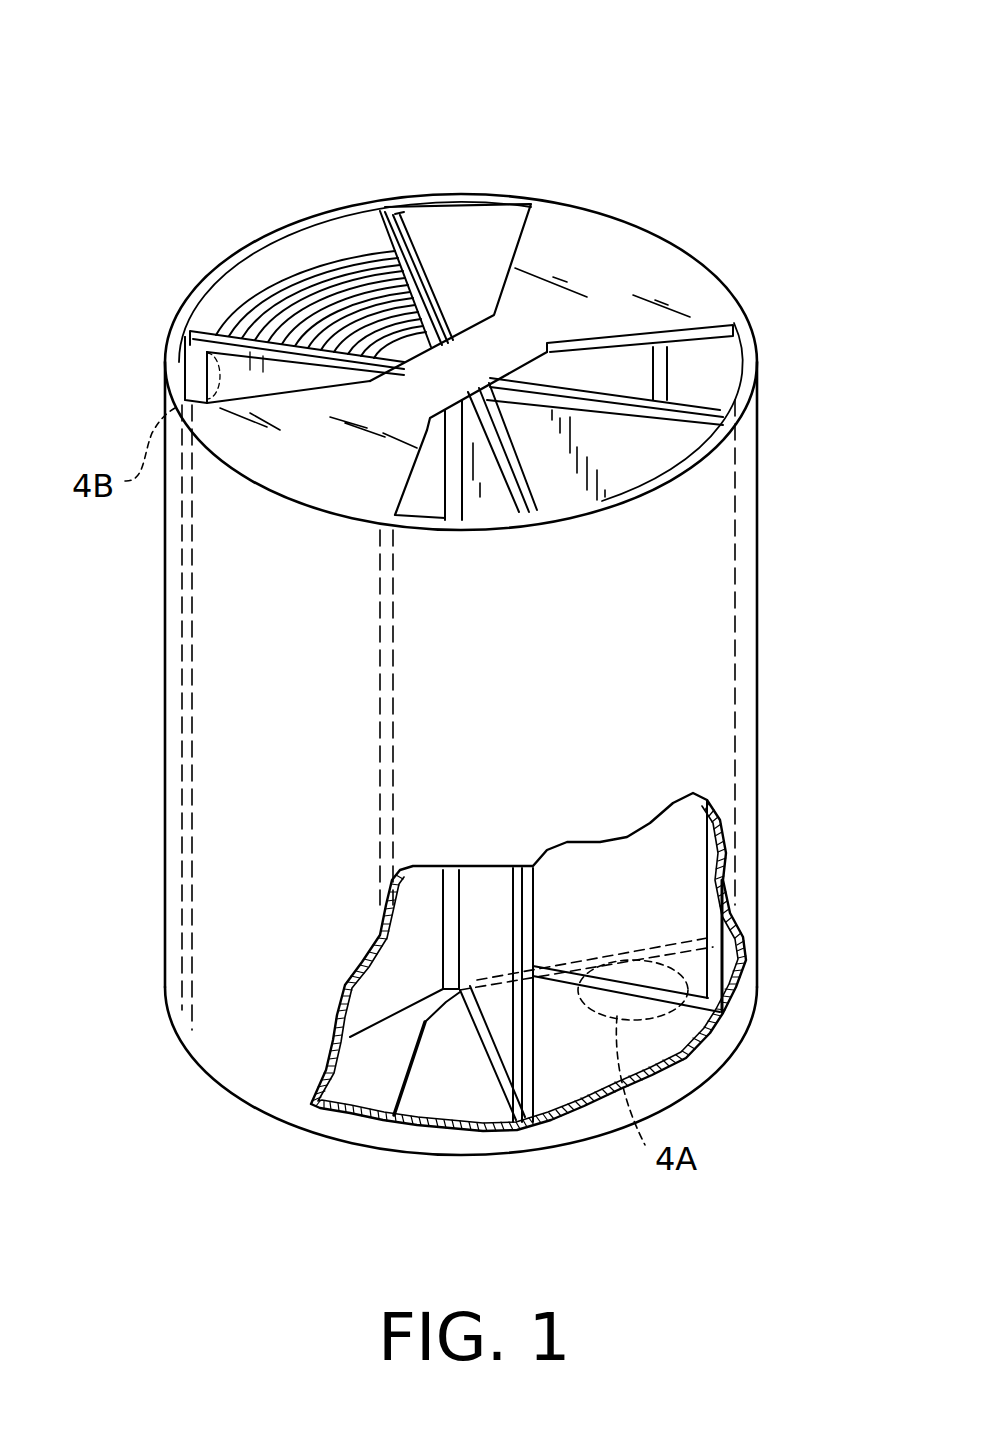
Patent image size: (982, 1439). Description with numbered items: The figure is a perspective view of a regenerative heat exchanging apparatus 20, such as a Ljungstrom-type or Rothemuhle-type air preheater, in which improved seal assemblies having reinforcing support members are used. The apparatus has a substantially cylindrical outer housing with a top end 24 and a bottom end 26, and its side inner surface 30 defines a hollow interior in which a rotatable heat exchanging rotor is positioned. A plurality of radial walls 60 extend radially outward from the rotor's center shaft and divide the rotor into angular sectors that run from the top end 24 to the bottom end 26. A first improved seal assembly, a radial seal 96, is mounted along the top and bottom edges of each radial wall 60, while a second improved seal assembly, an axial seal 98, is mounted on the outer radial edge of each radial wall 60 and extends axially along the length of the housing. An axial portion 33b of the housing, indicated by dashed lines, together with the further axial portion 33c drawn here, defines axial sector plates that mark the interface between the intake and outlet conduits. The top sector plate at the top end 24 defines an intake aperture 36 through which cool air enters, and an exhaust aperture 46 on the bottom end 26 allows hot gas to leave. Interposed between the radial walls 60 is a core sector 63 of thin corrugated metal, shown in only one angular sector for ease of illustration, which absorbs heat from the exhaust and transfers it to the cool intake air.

The regenerative heat exchanging apparatus 20 is at (697, 94).
The top end 24 is at (162, 366).
The bottom end 26 is at (207, 1073).
The side inner surface 30 is at (483, 272).
The axial portion 33b is at (704, 264).
The side wall portion of housing 33c is at (210, 686).
The intake aperture 36 is at (527, 238).
The exhaust aperture 46 is at (417, 1073).
The radial wall 60 is at (627, 367).
The core sector 63 is at (318, 275).
The radial seal 96 is at (407, 243).
The axial seal 98 is at (180, 334).